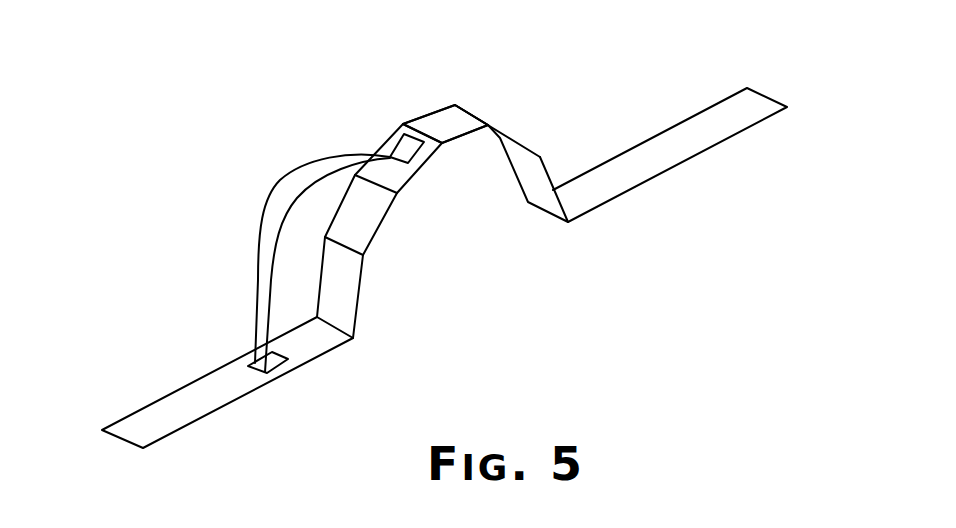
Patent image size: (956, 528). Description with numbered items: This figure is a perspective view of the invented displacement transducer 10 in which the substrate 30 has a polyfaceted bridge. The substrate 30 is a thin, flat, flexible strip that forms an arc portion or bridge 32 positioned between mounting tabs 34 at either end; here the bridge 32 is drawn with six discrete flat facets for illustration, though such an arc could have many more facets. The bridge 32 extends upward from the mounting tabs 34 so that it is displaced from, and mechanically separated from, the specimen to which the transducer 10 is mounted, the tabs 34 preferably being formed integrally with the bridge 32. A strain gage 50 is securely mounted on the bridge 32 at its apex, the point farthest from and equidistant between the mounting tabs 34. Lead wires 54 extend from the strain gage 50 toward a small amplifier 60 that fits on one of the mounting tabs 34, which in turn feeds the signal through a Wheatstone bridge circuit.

The displacement transducer 10 is at (330, 110).
The substrate 30 is at (521, 148).
The arc portion or bridge 32 is at (513, 138).
The mounting tabs 34 is at (165, 405).
The strain gage 50 is at (405, 134).
The lead wires 54 is at (287, 213).
The amplifier 60 is at (299, 351).